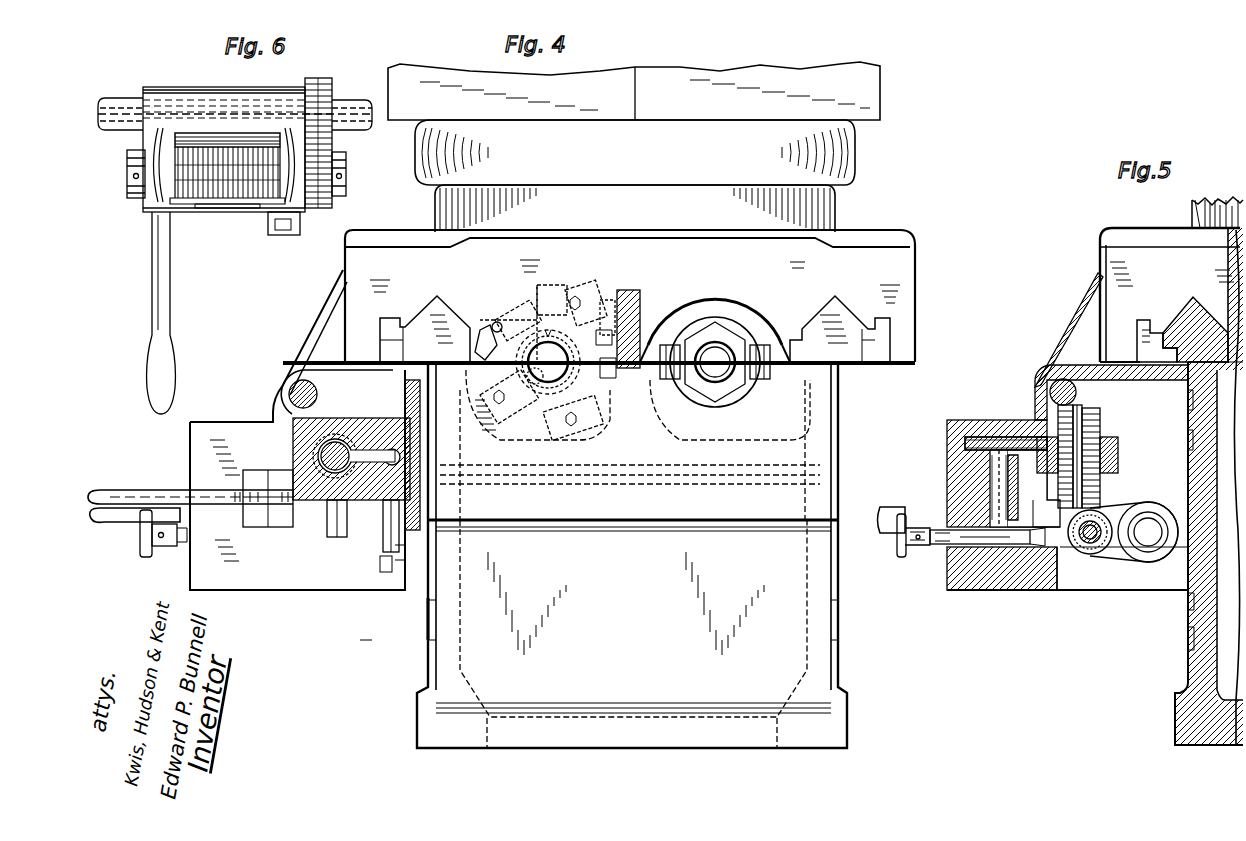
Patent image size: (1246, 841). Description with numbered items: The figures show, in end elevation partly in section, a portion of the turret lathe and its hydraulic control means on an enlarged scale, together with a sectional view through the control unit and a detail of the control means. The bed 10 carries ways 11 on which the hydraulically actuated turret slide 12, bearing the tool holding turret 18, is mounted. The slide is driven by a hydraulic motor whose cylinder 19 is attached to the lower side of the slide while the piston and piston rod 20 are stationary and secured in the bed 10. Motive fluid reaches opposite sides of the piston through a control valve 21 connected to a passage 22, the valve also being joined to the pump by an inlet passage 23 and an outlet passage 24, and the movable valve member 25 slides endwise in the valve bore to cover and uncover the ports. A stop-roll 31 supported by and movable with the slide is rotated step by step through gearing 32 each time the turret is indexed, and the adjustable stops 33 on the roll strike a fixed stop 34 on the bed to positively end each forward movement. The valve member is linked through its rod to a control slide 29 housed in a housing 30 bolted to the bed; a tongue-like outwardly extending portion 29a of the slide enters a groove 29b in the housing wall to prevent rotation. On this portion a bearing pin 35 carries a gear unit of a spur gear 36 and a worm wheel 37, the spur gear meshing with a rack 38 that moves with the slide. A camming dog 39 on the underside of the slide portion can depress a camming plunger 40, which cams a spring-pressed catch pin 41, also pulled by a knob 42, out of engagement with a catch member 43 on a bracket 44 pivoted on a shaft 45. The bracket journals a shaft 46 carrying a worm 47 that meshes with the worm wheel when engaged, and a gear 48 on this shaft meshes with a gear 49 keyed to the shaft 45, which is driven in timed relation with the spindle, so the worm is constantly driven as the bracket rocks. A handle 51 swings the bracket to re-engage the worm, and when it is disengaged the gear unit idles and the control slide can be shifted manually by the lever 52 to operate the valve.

In FIG. 4, the bed 10 is at (428, 675).
In FIG. 5, the bed 10 is at (1175, 690).
In FIG. 4, the ways 11 is at (432, 312).
In FIG. 5, the ways 11 is at (1178, 312).
In FIG. 4, the turret slide 12 is at (905, 233).
In FIG. 5, the turret slide 12 is at (1118, 232).
In FIG. 4, the tool holding turret 18 is at (868, 82).
In FIG. 4, the cylinder 19 is at (780, 308).
In FIG. 4, the piston and piston rod 20 is at (720, 375).
In FIG. 4, the control valve 21 is at (293, 438).
In FIG. 4, the passage 22 is at (455, 480).
In FIG. 4, the inlet passage 23 is at (325, 525).
In FIG. 4, the outlet passage 24 is at (380, 522).
In FIG. 4, the movable valve member 25 is at (337, 518).
In FIG. 5, the control slide 29 is at (1100, 437).
In FIG. 5, the outwardly extending portion 29a is at (1030, 432).
In FIG. 5, the groove 29b is at (965, 444).
In FIG. 4, the housing 30 is at (395, 592).
In FIG. 5, the housing 30 is at (947, 590).
In FIG. 4, the stop-roll 31 is at (548, 362).
In FIG. 4, the gearing 32 is at (618, 290).
In FIG. 4, the stops 33 is at (520, 300).
In FIG. 4, the fixed stop 34 is at (600, 432).
In FIG. 5, the bearing pin 35 is at (1118, 465).
In FIG. 5, the spur gear 36 is at (1073, 470).
In FIG. 5, the worm wheel 37 is at (1075, 420).
In FIG. 4, the rack 38 is at (289, 396).
In FIG. 5, the rack 38 is at (1037, 385).
In FIG. 5, the camming dog 39 is at (990, 455).
In FIG. 5, the camming plunger 40 is at (972, 485).
In FIG. 5, the catch pin 41 is at (990, 590).
In FIG. 4, the knob 42 is at (146, 557).
In FIG. 5, the knob 42 is at (900, 557).
In FIG. 6, the catch member 43 is at (288, 236).
In FIG. 5, the catch member 43 is at (1045, 548).
In FIG. 6, the bracket 44 is at (180, 88).
In FIG. 5, the bracket 44 is at (1125, 555).
In FIG. 6, the shaft 45 is at (118, 100).
In FIG. 5, the shaft 45 is at (1148, 512).
In FIG. 6, the shaft 46 is at (127, 180).
In FIG. 5, the shaft 46 is at (1085, 548).
In FIG. 6, the worm 47 is at (236, 208).
In FIG. 5, the worm 47 is at (1100, 515).
In FIG. 6, the gear 48 is at (332, 188).
In FIG. 6, the gear 49 is at (328, 90).
In FIG. 6, the handle 51 is at (170, 310).
In FIG. 4, the handle 51 is at (124, 520).
In FIG. 5, the handle 51 is at (888, 510).
In FIG. 4, the lever 52 is at (118, 490).